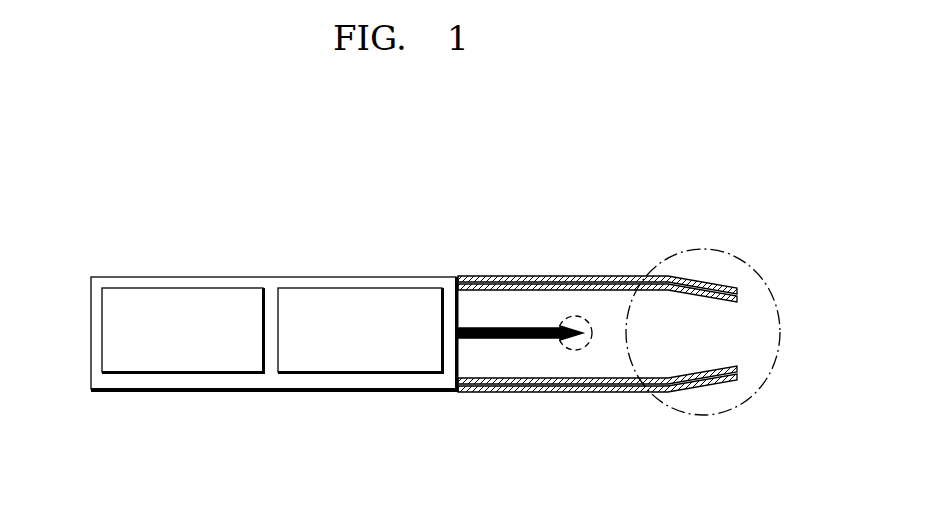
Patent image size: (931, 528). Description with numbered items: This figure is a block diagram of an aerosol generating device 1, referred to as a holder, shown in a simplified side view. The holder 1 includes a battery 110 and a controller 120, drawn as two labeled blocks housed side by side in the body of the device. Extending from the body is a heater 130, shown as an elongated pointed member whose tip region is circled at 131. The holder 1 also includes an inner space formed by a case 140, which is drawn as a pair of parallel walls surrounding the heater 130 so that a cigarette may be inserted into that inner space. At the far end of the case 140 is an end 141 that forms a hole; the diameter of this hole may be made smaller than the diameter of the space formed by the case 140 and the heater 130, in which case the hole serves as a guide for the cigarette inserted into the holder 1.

The aerosol generating device 1 is at (536, 199).
The battery 110 is at (193, 287).
The controller 120 is at (375, 287).
The heater 130 is at (519, 325).
The needle tip 131 is at (575, 350).
The case 140 is at (605, 275).
The end 141 is at (740, 262).